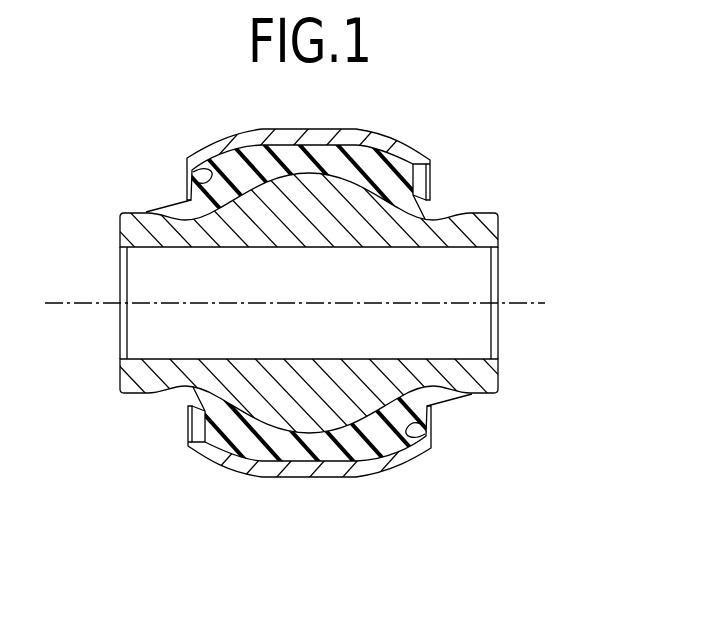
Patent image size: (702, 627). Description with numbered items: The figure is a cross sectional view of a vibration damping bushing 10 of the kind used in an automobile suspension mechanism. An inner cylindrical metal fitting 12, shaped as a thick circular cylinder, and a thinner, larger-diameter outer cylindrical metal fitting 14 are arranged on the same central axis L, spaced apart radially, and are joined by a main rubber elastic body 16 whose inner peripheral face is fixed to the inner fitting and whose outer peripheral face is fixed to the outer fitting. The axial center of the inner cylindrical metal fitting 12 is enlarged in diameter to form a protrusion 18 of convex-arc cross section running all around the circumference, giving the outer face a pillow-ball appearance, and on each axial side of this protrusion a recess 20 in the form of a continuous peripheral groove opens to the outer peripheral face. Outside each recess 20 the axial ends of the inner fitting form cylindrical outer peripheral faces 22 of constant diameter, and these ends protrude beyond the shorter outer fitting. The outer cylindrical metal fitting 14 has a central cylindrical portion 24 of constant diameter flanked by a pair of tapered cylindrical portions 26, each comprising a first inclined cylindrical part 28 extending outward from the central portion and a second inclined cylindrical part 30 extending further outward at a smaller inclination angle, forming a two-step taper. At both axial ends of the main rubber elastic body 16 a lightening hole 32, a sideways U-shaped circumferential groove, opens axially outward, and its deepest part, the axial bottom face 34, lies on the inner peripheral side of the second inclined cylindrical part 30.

The vibration damping bushing 10 is at (487, 104).
The inner cylindrical metal fitting 12 is at (315, 303).
The outer cylindrical metal fitting 14 is at (309, 291).
The main rubber elastic body 16 is at (306, 301).
The protrusion 18 is at (312, 190).
The recess 20 is at (412, 220).
The cylindrical outer peripheral face 22 is at (134, 232).
The central cylindrical portion 24 is at (303, 476).
The tapered cylindrical portion 26 is at (308, 301).
The first inclined cylindrical part 28 is at (393, 152).
The second inclined cylindrical part 30 is at (392, 104).
The lightening hole 32 is at (201, 178).
The axial bottom face 34 is at (410, 181).
The central axis L is at (532, 300).